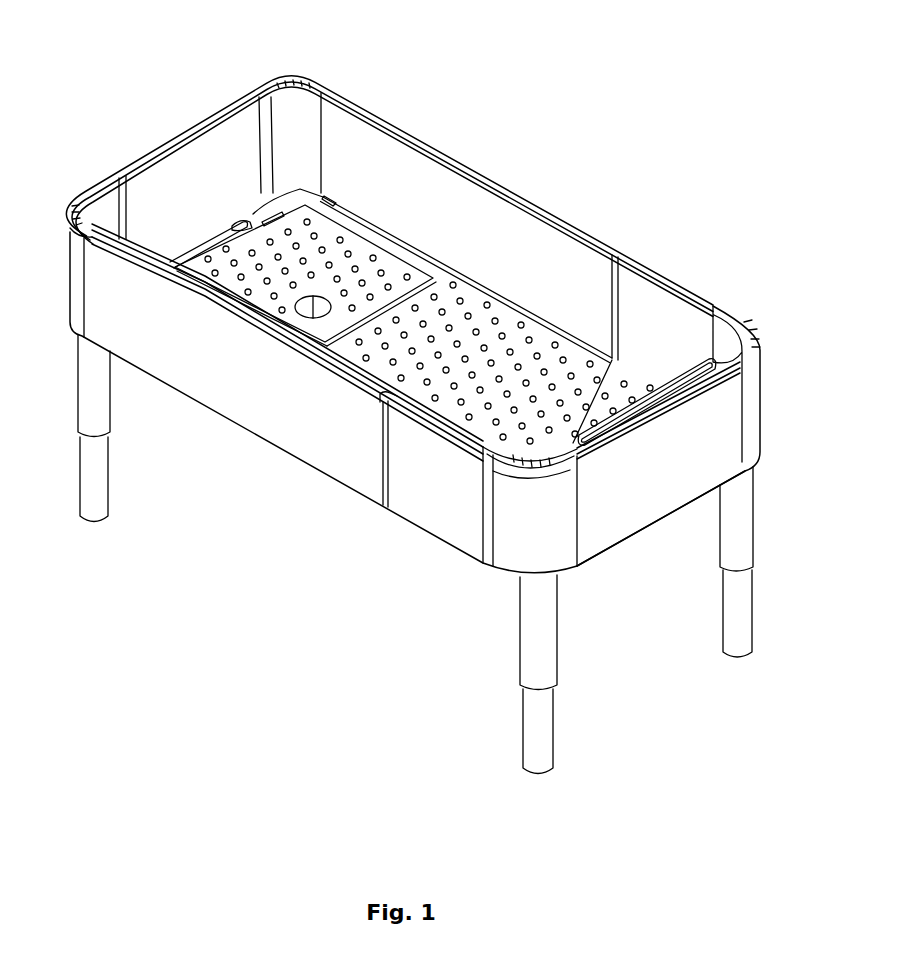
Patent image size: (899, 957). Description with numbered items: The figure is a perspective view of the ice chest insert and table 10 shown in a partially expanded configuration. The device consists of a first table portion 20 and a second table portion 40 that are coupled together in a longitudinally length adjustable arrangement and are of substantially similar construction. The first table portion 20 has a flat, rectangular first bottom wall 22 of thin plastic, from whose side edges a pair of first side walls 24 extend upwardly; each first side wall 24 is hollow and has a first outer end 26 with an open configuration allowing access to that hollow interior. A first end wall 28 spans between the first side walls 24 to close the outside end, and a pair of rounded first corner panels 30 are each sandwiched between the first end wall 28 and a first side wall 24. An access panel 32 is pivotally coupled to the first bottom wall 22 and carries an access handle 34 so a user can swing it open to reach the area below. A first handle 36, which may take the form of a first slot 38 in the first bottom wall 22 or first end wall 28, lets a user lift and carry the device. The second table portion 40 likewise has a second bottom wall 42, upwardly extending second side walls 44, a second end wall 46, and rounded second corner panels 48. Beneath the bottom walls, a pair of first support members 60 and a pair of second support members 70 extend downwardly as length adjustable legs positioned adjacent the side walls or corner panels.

The ice chest insert and table 10 is at (560, 85).
The first table portion 20 is at (393, 100).
The first bottom wall 22 is at (446, 300).
The first side walls 24 is at (543, 262).
The first outer ends 26 is at (618, 256).
The first end wall 28 is at (190, 182).
The first corner panels 30 is at (305, 122).
The access panel 32 is at (393, 268).
The access handle 34 is at (299, 297).
The first handle 36 is at (258, 213).
The first slot 38 is at (188, 245).
The second table portion 40 is at (752, 305).
The second bottom wall 42 is at (640, 385).
The second side walls 44 is at (687, 330).
The second end wall 46 is at (668, 488).
The second corner panels 48 is at (756, 407).
The first support members 60 is at (93, 385).
The second support members 70 is at (738, 527).